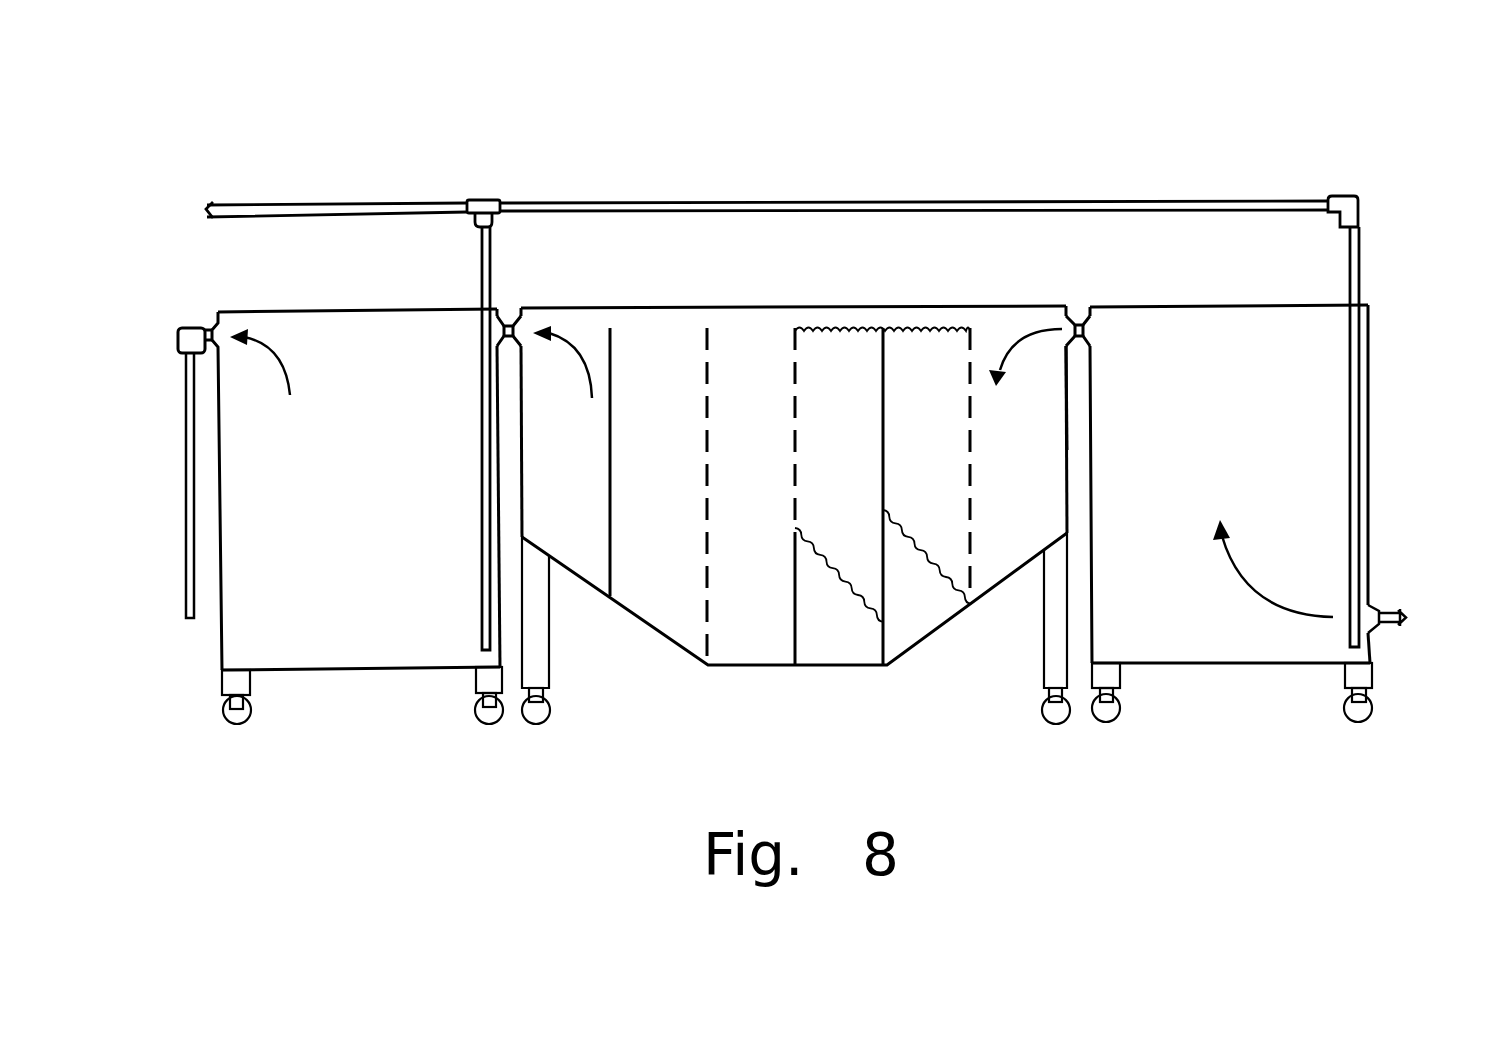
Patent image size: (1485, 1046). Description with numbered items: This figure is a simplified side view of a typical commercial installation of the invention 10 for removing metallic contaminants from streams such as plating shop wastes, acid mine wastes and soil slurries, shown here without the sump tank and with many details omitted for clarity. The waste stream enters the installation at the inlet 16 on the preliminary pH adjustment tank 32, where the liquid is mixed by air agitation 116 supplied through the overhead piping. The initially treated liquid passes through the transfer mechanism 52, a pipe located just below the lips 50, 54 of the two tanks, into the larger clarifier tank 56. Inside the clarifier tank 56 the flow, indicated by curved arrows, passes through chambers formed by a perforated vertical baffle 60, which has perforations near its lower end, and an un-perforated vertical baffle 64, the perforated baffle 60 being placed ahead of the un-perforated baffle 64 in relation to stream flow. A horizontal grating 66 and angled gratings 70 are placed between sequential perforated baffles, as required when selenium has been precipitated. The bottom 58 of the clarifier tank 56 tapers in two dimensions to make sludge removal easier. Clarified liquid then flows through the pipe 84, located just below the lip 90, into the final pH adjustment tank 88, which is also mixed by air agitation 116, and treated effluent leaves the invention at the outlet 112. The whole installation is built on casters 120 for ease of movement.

The invention 10 is at (244, 126).
The waste stream inlet 16 is at (1385, 607).
The preliminary pH adjustment tank 32 is at (1210, 690).
The lip of preliminary pH adjustment tank 50 is at (1093, 355).
The transfer mechanism 52 is at (1078, 322).
The lip of clarifier tank 54 is at (1067, 367).
The clarifier tank 56 is at (766, 265).
The shaped bottom 58 is at (781, 667).
The perforated vertical baffle 60 is at (707, 357).
The un-perforated vertical baffle 64 is at (610, 357).
The horizontal grating 66 is at (830, 330).
The angled grating 70 is at (933, 552).
The transfer mechanism 84 is at (508, 324).
The final pH adjustment tank 88 is at (383, 708).
The lip of final pH adjustment tank 90 is at (220, 370).
The treated effluent outlet 112 is at (177, 608).
The air agitation 116 is at (1013, 202).
The casters 120 is at (1374, 700).